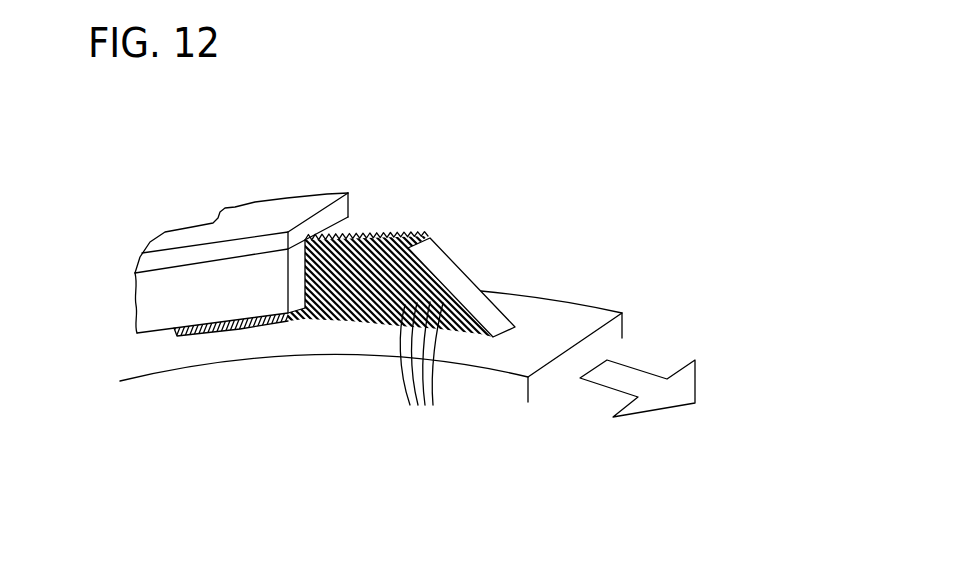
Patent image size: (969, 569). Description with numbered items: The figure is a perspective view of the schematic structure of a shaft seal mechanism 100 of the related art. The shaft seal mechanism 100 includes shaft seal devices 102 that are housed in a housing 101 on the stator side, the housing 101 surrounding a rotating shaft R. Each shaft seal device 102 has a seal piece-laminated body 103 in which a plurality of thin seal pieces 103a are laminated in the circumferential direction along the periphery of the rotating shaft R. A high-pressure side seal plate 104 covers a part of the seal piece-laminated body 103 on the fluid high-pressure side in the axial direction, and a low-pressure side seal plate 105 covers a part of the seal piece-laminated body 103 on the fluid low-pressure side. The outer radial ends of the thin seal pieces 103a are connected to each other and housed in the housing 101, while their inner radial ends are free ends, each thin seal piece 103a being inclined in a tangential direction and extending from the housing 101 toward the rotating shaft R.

The shaft seal mechanism 100 is at (610, 116).
The housing 101 is at (271, 201).
The shaft seal device 102 is at (521, 210).
The seal piece-laminated body 103 is at (347, 430).
The thin seal pieces 103a is at (416, 369).
The high-pressure side seal plate 104 is at (140, 333).
The low-pressure side seal plate 105 is at (351, 218).
The rotating shaft R is at (623, 328).